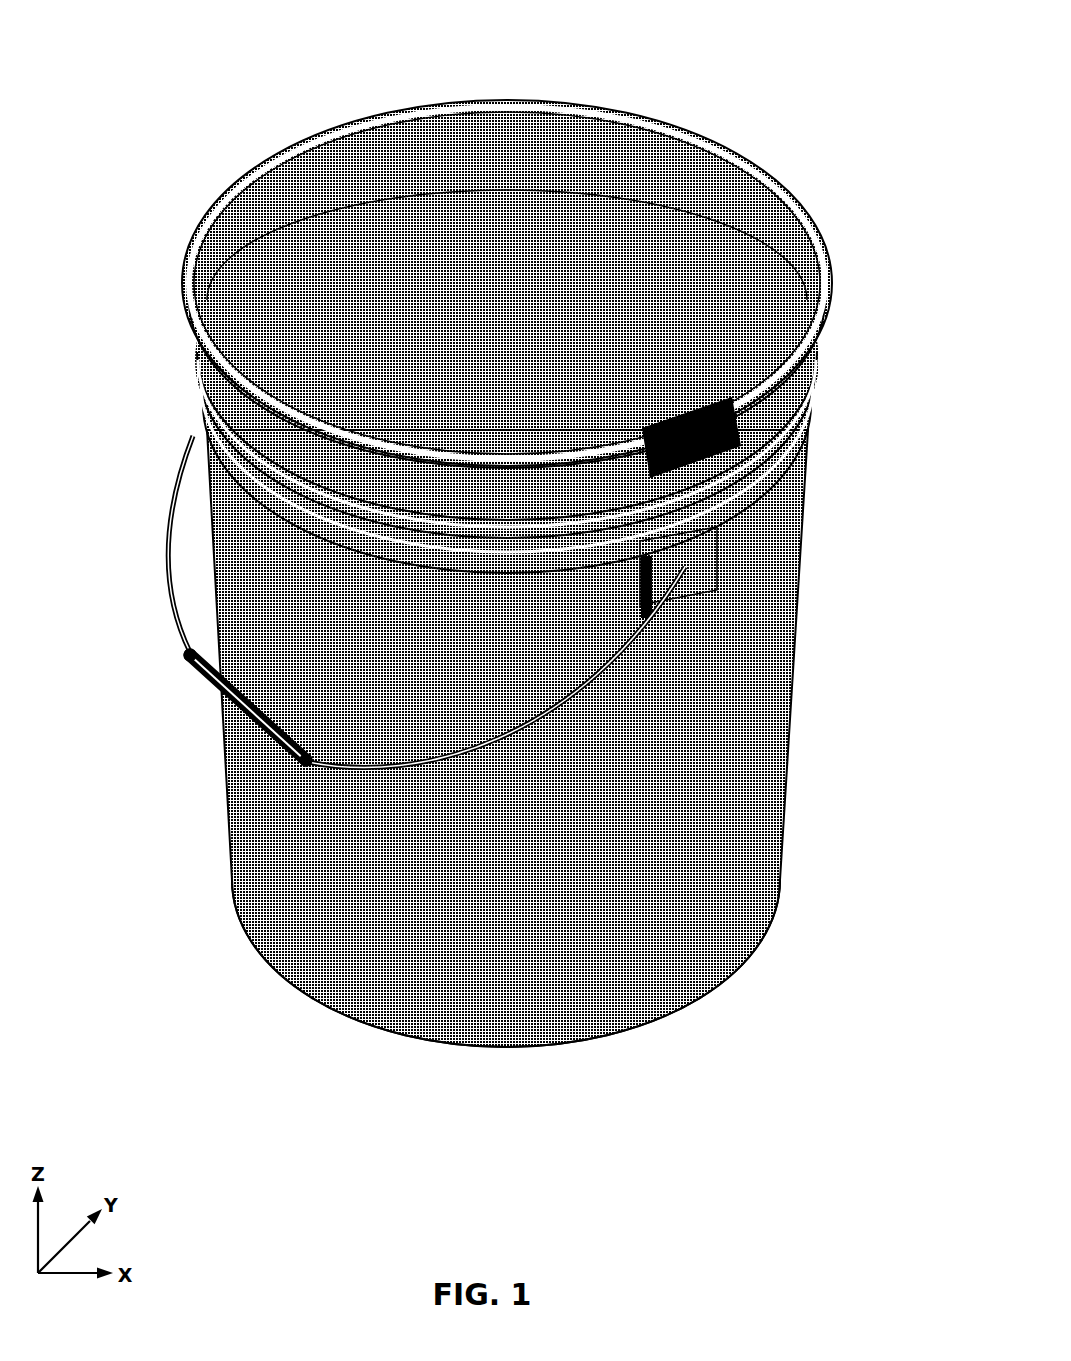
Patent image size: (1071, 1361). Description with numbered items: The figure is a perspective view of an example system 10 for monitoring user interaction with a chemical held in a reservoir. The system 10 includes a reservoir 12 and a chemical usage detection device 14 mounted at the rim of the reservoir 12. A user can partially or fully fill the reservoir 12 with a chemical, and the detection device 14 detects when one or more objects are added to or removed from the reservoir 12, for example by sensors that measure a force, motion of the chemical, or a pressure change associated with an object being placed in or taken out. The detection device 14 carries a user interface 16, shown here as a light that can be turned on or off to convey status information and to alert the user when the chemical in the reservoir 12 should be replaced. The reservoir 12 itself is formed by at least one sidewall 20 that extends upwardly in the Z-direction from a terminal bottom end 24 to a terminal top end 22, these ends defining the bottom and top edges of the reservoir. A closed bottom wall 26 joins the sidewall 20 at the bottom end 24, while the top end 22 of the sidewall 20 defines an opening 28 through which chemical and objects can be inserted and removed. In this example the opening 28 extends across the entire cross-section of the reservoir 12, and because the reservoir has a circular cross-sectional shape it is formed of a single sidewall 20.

The system 10 is at (514, 575).
The reservoir 12 is at (850, 727).
The chemical usage detection device 14 is at (770, 432).
The user interface 16 is at (662, 448).
The sidewall 20 is at (230, 832).
The terminal top end 22 is at (187, 278).
The terminal bottom end 24 is at (672, 1010).
The closed bottom wall 26 is at (495, 1065).
The opening 28 is at (334, 158).